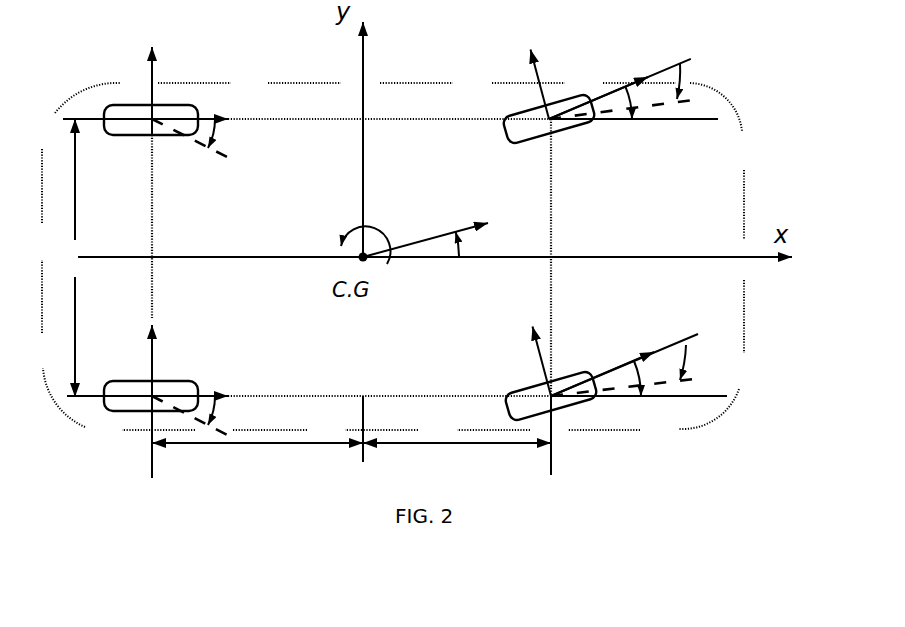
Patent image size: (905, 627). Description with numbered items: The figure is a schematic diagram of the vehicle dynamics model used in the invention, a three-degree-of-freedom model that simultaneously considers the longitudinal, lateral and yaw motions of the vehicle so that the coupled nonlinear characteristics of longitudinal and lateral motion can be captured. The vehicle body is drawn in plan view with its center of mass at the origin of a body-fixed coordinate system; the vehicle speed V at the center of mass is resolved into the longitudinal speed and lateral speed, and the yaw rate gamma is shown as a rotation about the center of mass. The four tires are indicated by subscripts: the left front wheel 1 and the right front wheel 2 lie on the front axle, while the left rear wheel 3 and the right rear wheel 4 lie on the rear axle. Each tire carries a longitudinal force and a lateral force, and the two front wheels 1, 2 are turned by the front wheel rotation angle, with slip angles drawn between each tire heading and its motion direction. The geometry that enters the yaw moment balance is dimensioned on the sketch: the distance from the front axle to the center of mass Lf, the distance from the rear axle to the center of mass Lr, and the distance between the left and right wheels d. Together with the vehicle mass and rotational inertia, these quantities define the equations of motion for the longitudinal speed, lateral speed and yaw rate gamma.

The left front wheel 1 is at (613, 87).
The right front wheel 2 is at (613, 366).
The left rear wheel 3 is at (181, 95).
The right rear wheel 4 is at (176, 381).
The vehicle speed V is at (425, 237).
The yaw rate gamma is at (368, 239).
The distance between left and right wheels d is at (63, 258).
The distance from rear axle to center of mass Lr is at (257, 442).
The distance from front axle to center of mass Lf is at (457, 443).